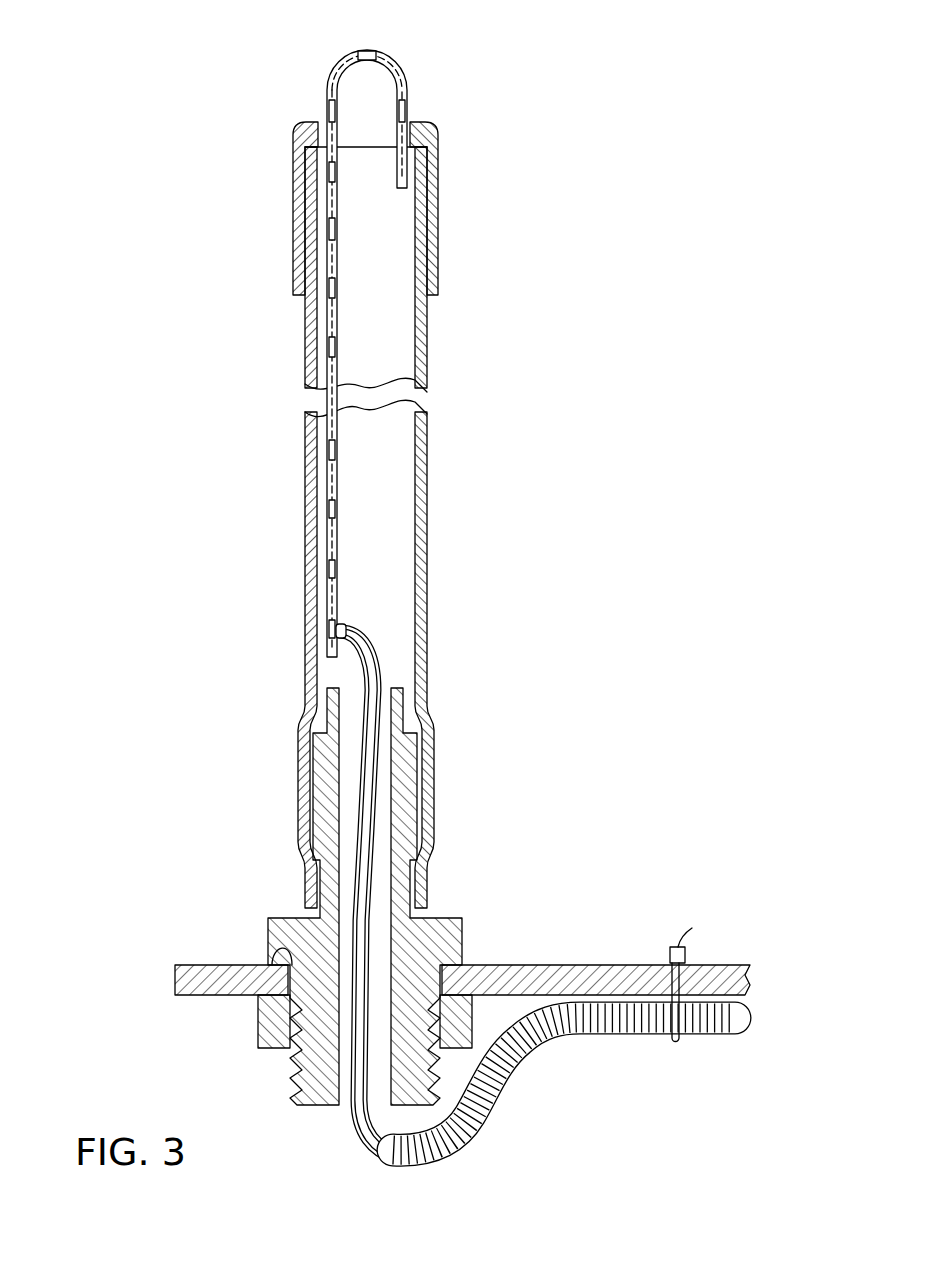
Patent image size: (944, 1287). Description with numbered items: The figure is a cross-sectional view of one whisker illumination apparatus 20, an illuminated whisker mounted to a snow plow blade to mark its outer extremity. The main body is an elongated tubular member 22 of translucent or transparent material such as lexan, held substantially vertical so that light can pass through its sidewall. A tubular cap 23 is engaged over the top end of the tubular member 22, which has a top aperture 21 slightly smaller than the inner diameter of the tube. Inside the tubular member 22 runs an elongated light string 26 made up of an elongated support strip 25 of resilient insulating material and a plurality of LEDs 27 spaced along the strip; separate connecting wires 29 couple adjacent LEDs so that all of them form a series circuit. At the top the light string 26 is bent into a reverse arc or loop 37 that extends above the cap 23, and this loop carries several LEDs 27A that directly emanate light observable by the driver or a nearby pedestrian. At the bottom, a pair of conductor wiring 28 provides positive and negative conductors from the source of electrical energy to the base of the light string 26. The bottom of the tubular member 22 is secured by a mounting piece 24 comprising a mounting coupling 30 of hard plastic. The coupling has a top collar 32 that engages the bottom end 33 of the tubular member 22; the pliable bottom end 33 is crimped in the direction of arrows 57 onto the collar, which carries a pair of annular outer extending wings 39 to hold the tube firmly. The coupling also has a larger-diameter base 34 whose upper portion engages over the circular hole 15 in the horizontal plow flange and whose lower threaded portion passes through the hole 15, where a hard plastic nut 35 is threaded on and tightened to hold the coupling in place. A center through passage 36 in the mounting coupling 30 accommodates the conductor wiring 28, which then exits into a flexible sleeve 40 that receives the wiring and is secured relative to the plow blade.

The circular hole 15 is at (278, 941).
The whisker illumination apparatus 20 is at (434, 578).
The top aperture 21 is at (428, 126).
The elongated tubular member 22 is at (426, 451).
The tubular cap 23 is at (433, 196).
The mounting piece 24 is at (472, 904).
The elongated support strip 25 is at (312, 193).
The elongated light string 26 is at (348, 357).
The LED 27 is at (329, 172).
The LED above cap 27A is at (366, 51).
The conductor wiring 28 is at (358, 793).
The connecting wires 29 is at (329, 327).
The mounting coupling 30 is at (274, 915).
The top collar 32 is at (418, 748).
The bottom end 33 is at (306, 803).
The base 34 is at (320, 1030).
The nut 35 is at (268, 1020).
The center through passage 36 is at (348, 1083).
The loop 37 is at (408, 56).
The annular outer extending wings 39 is at (410, 690).
The flexible sleeve 40 is at (523, 1092).
The arrows 57 is at (303, 824).